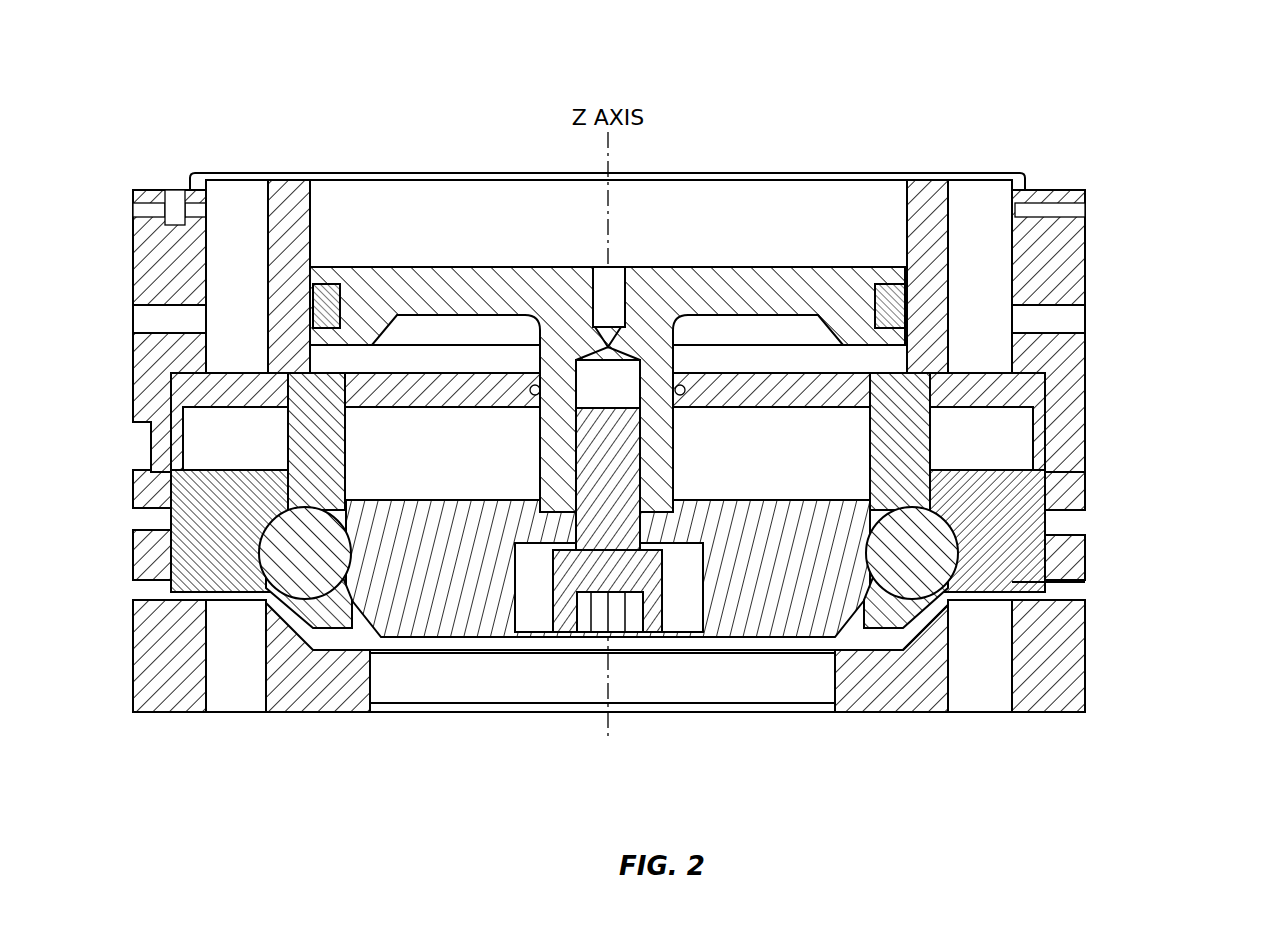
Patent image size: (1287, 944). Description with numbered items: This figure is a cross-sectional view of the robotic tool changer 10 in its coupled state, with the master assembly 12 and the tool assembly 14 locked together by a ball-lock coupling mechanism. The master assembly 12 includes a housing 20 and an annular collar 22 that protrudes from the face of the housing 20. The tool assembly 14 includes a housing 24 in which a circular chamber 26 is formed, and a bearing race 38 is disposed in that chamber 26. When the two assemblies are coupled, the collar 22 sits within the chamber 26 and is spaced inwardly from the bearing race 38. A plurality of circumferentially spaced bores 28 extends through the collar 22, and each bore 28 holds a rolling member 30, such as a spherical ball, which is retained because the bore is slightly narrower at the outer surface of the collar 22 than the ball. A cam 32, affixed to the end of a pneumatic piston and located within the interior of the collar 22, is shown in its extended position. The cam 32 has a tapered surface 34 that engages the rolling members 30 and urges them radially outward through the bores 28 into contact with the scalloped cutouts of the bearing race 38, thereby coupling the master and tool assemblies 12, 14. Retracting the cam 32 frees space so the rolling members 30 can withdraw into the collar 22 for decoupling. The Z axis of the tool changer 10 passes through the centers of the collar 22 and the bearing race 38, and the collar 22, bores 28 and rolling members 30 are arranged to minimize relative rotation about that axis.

The robotic tool changer 10 is at (888, 65).
The master assembly 12 is at (1147, 289).
The tool assembly 14 is at (1147, 674).
The housing 20 is at (1052, 452).
The annular collar 22 is at (907, 443).
The housing 24 is at (1068, 492).
The circular chamber 26 is at (486, 684).
The bores 28 is at (945, 606).
The rolling member 30 is at (292, 562).
The cam 32 is at (800, 600).
The tapered surface 34 is at (366, 604).
The bearing race 38 is at (288, 474).